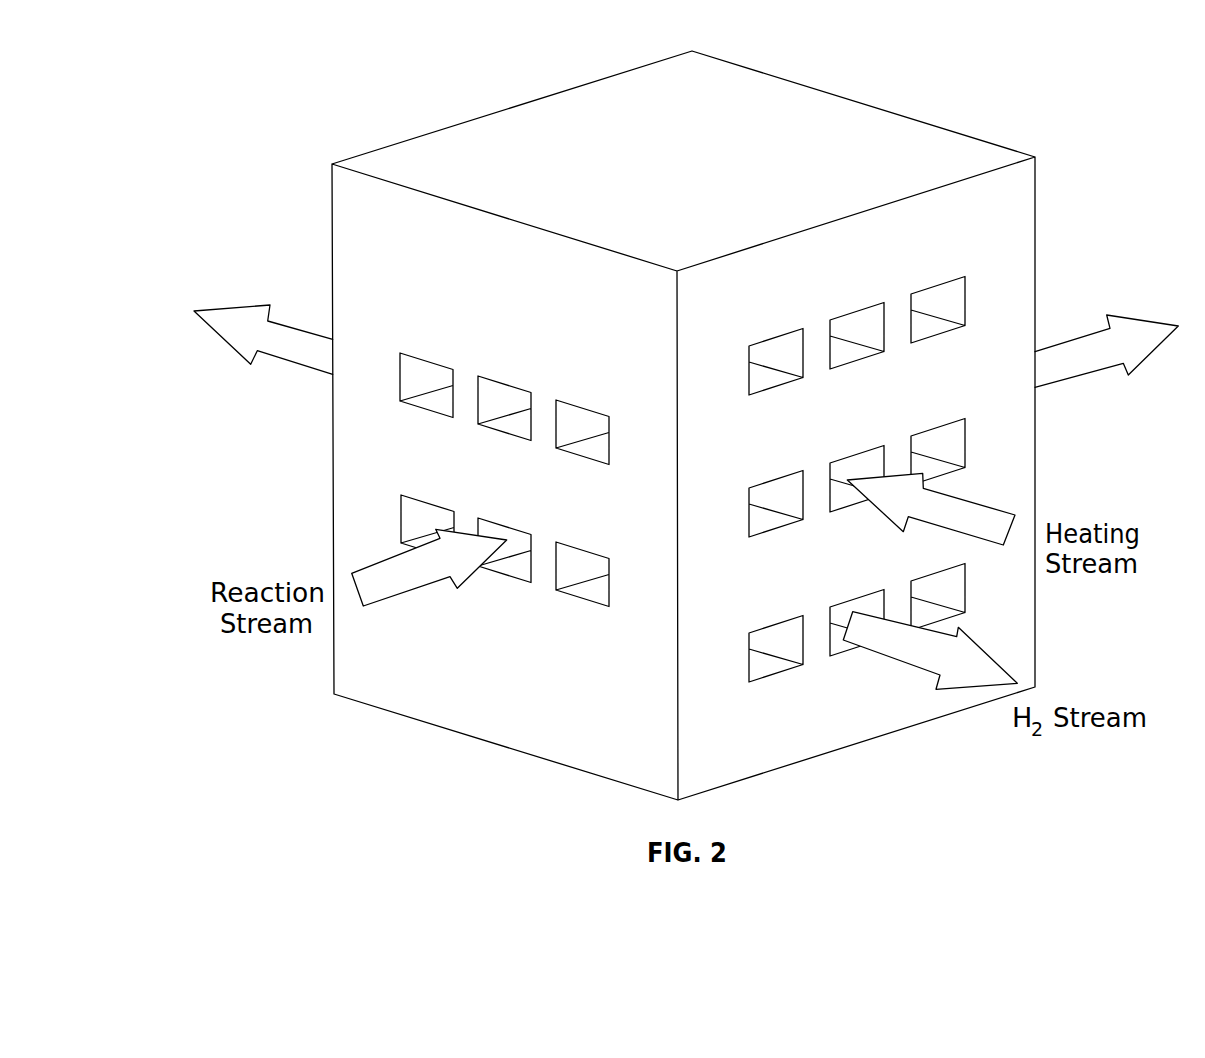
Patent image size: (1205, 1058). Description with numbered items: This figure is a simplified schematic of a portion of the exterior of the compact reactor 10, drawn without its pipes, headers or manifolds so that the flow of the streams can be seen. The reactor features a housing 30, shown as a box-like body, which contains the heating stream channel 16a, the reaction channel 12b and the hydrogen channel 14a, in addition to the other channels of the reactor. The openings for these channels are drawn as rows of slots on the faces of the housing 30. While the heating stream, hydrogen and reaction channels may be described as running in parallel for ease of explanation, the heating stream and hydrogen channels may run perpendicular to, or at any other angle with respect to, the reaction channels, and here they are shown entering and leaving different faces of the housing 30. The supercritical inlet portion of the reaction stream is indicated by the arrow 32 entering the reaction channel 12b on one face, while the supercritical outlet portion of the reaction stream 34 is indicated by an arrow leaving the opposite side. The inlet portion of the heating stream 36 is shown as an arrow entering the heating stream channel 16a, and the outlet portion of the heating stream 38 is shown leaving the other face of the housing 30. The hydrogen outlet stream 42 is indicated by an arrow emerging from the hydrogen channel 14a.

The reactor 10 is at (221, 88).
The housing 30 is at (760, 86).
The reaction channel 12b is at (412, 514).
The hydrogen channel 14a is at (958, 588).
The heating stream channel 16a is at (937, 437).
The supercritical inlet portion of the reaction stream 32 is at (415, 592).
The supercritical outlet portion of the reaction stream 34 is at (1065, 342).
The inlet portion of the heating stream 36 is at (985, 505).
The outlet portion of the heating stream 38 is at (280, 321).
The hydrogen outlet stream 42 is at (890, 663).